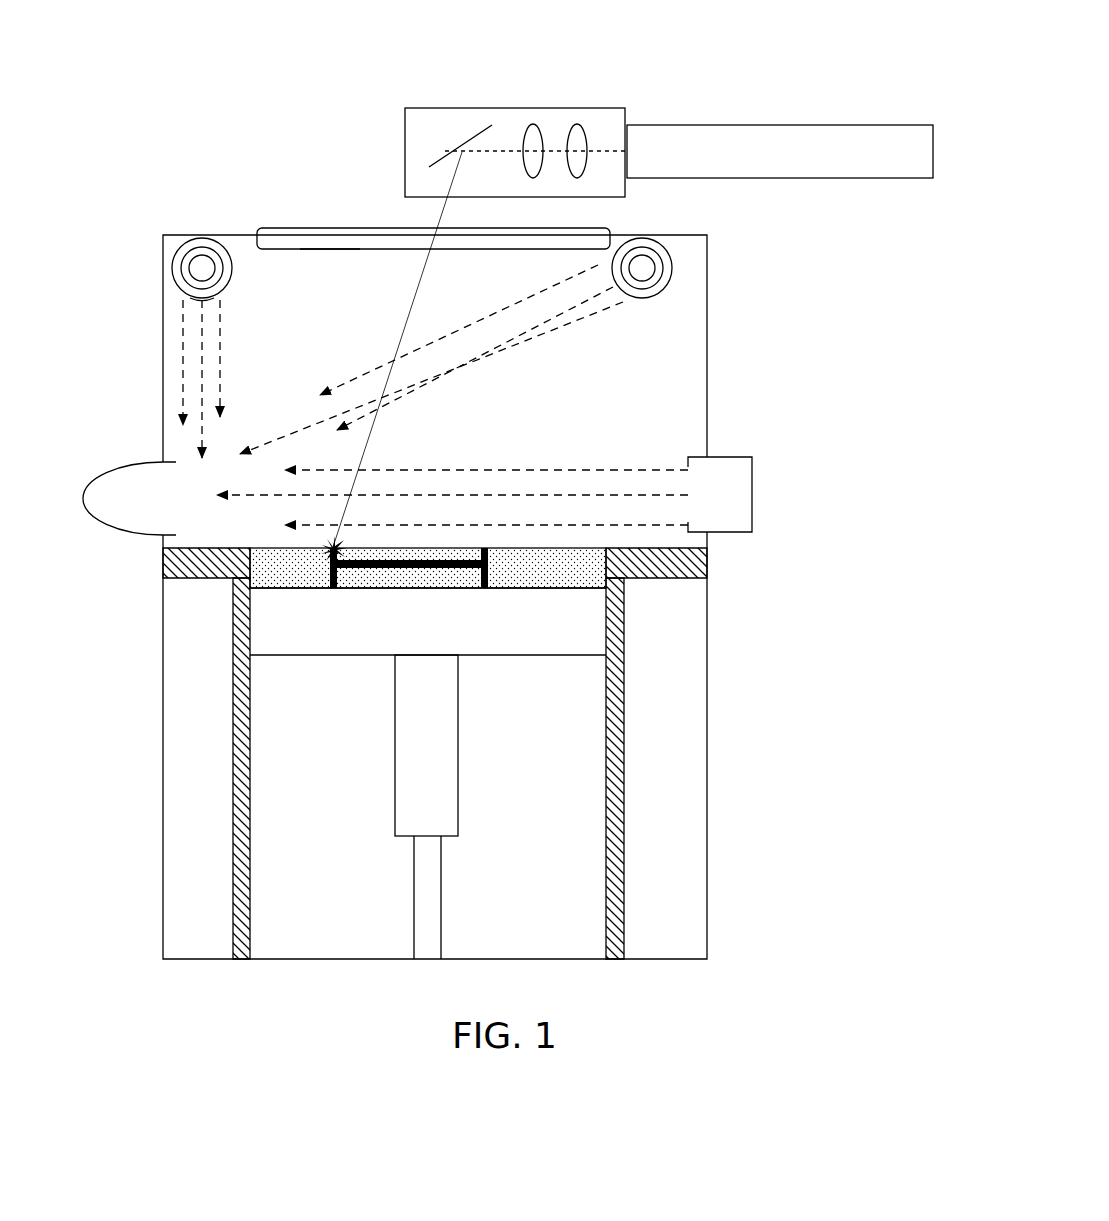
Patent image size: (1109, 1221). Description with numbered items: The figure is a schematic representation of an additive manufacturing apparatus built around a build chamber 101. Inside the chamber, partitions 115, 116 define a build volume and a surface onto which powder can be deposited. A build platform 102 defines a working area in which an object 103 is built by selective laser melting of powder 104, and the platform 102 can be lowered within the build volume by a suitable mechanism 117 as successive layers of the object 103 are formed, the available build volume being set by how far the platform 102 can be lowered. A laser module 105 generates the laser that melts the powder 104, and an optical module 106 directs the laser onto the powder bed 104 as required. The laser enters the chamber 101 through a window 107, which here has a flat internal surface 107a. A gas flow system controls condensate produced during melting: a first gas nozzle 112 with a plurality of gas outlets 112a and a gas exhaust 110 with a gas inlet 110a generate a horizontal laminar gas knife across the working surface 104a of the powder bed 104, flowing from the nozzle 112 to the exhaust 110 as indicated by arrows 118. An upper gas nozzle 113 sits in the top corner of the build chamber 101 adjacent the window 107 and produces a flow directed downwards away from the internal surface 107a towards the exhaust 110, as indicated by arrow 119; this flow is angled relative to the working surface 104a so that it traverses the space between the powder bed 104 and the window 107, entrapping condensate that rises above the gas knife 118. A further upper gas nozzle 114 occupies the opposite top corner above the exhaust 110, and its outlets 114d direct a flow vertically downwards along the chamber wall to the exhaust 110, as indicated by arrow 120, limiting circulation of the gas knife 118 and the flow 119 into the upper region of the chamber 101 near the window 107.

The build chamber 101 is at (712, 350).
The build platform 102 is at (566, 627).
The object 103 is at (405, 575).
The powder 104 is at (280, 572).
The working surface 104a is at (563, 548).
The laser module 105 is at (748, 145).
The optical module 106 is at (522, 103).
The window 107 is at (362, 242).
The internal surface 107a is at (330, 250).
The gas exhaust 110 is at (124, 535).
The gas inlet 110a is at (167, 505).
The first gas nozzle 112 is at (758, 512).
The gas outlets 112a is at (695, 487).
The upper gas nozzle 113 is at (675, 250).
The further upper gas nozzle 114 is at (165, 245).
The outlets 114d is at (200, 302).
The partition 115 is at (628, 780).
The partition 116 is at (690, 572).
The mechanism 117 is at (427, 778).
The arrows indicating horizontal gas flow 118 is at (452, 497).
The arrow indicating angled gas flow 119 is at (431, 359).
The arrow indicating vertical gas flow 120 is at (203, 379).